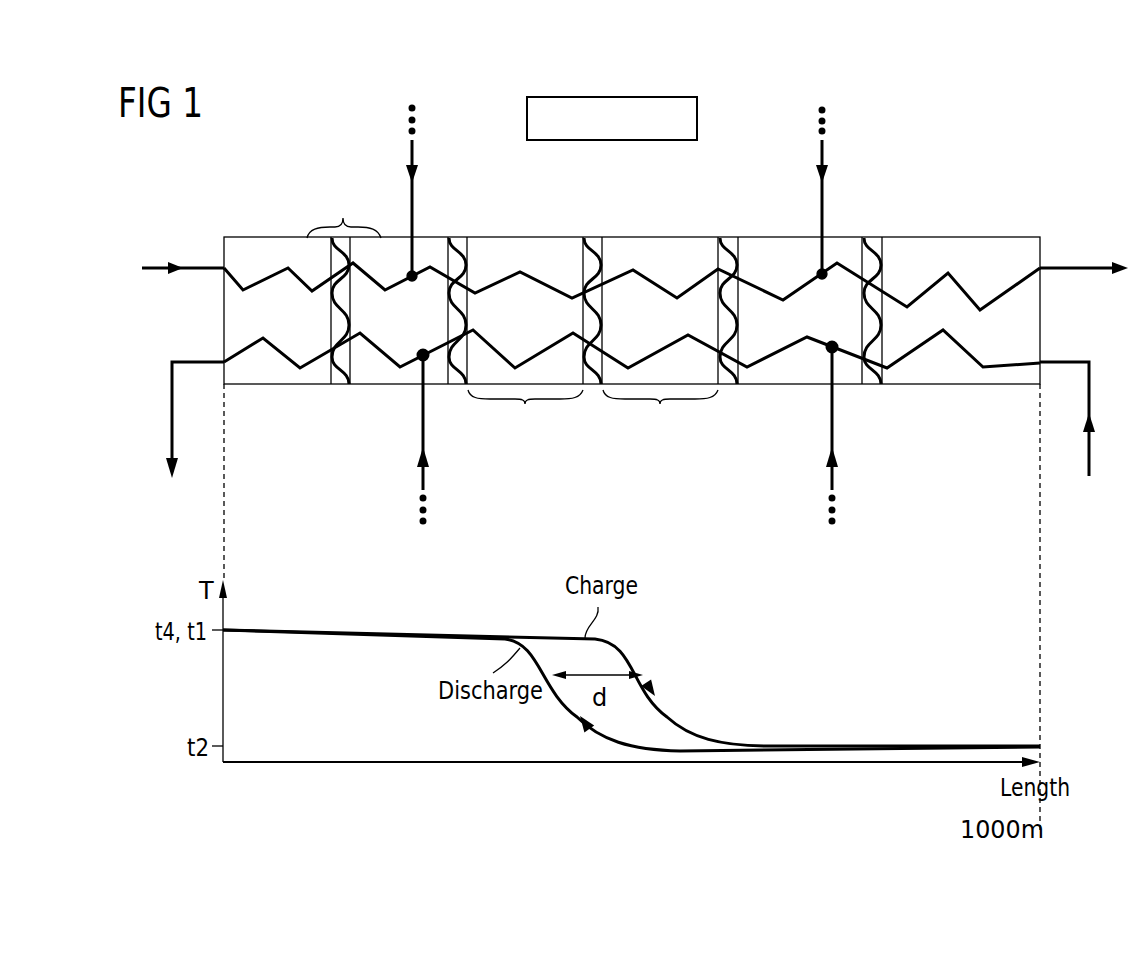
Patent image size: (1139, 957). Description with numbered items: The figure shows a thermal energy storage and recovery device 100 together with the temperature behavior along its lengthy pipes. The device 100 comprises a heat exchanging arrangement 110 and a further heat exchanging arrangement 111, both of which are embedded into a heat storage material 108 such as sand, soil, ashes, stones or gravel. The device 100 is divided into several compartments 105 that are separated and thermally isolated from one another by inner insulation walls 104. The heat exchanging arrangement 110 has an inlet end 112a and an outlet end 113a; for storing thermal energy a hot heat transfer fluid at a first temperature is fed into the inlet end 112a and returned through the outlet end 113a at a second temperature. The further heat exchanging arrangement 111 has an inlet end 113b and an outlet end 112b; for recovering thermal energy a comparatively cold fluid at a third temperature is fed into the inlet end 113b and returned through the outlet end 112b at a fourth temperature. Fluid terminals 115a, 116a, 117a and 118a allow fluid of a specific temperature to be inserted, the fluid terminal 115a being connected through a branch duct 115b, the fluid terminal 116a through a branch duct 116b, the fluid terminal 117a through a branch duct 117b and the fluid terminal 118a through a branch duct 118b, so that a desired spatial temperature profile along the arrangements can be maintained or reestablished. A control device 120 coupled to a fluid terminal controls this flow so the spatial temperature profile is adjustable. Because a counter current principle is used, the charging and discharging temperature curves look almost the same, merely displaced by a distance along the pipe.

The thermal energy storage and recovery device 100 is at (970, 150).
The inner insulation wall 104 is at (460, 240).
The compartment 105 is at (593, 413).
The heat storage material 108 is at (344, 209).
The heat exchanging arrangement 110 is at (511, 266).
The further heat exchanging arrangement 111 is at (618, 361).
The inlet end 112a is at (198, 232).
The outlet end 112b is at (198, 341).
The outlet end 113a is at (1075, 243).
The inlet end 113b is at (1075, 343).
The fluid terminal 115a is at (412, 200).
The branch duct 115b is at (412, 285).
The fluid terminal 116a is at (822, 207).
The branch duct 116b is at (822, 283).
The fluid terminal 117a is at (832, 432).
The branch duct 117b is at (826, 360).
The fluid terminal 118a is at (423, 432).
The branch duct 118b is at (417, 365).
The control device 120 is at (697, 98).